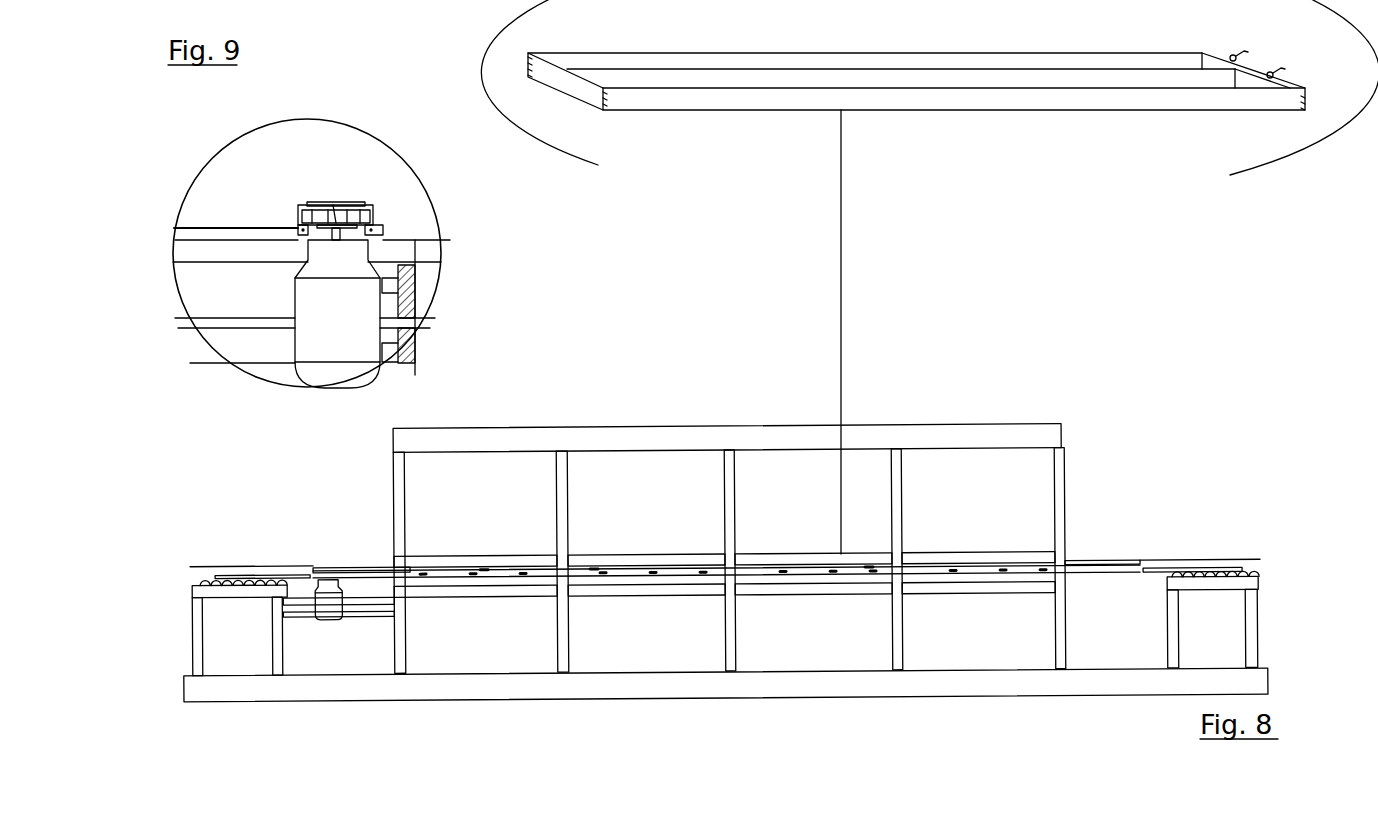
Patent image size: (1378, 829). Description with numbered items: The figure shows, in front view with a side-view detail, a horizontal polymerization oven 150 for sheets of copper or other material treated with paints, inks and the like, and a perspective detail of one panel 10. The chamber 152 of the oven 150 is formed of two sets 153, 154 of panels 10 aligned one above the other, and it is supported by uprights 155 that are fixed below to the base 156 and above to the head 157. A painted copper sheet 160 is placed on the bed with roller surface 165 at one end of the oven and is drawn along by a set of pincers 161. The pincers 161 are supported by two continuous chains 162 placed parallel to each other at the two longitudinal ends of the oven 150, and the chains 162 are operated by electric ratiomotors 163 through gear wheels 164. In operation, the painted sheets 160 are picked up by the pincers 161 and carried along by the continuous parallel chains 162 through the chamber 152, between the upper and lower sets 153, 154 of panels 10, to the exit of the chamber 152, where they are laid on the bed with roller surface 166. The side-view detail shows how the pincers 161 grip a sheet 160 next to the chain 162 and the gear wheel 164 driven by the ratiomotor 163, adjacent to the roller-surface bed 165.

In FIG. 8, the panel 10 is at (1030, 49).
In FIG. 8, the horizontal polymerization oven 150 is at (1079, 430).
In FIG. 8, the chamber 152 is at (672, 579).
In FIG. 8, the set of panels 153 is at (940, 559).
In FIG. 8, the set of panels 154 is at (942, 589).
In FIG. 8, the uprights 155 is at (568, 482).
In FIG. 8, the base 156 is at (452, 688).
In FIG. 8, the head 157 is at (518, 437).
In FIG. 9, the painted copper sheet 160 is at (227, 228).
In FIG. 8, the painted copper sheet 160 is at (305, 574).
In FIG. 9, the pincers 161 is at (298, 225).
In FIG. 8, the pincers 161 is at (497, 577).
In FIG. 9, the continuous chain 162 is at (370, 205).
In FIG. 8, the continuous chain 162 is at (358, 572).
In FIG. 9, the electric ratiomotor 163 is at (320, 362).
In FIG. 8, the electric ratiomotor 163 is at (328, 617).
In FIG. 9, the gear wheel 164 is at (317, 205).
In FIG. 9, the bed with roller surface 165 is at (410, 290).
In FIG. 8, the bed with roller surface 165 is at (222, 597).
In FIG. 8, the bed with roller surface 166 is at (1258, 587).